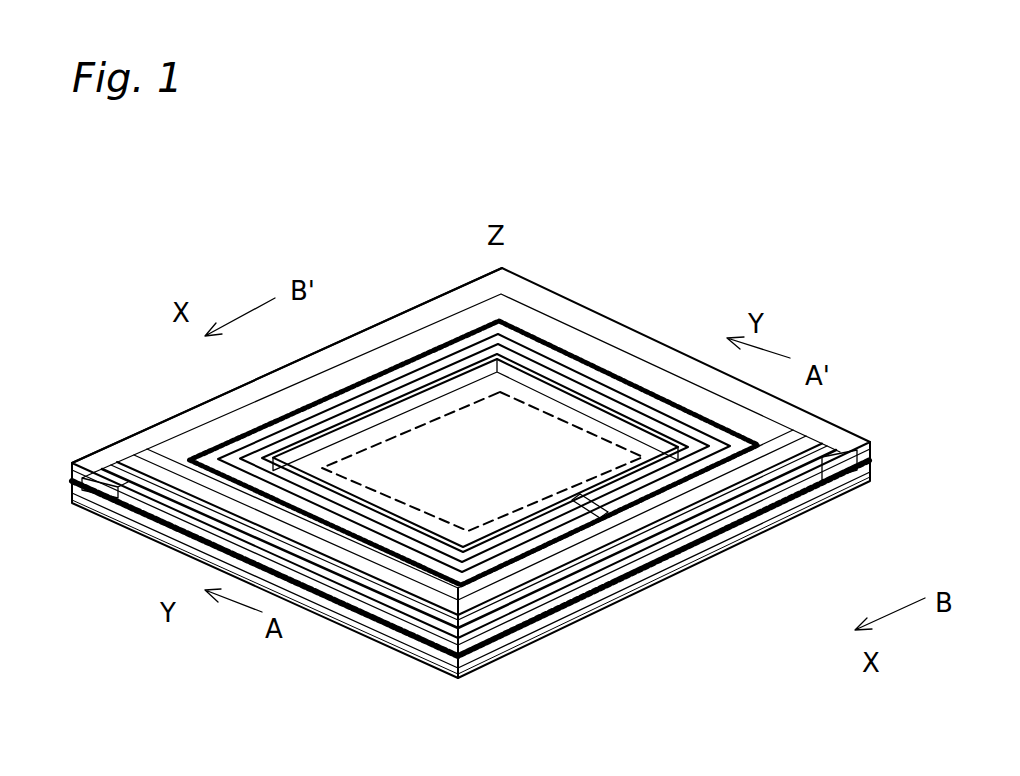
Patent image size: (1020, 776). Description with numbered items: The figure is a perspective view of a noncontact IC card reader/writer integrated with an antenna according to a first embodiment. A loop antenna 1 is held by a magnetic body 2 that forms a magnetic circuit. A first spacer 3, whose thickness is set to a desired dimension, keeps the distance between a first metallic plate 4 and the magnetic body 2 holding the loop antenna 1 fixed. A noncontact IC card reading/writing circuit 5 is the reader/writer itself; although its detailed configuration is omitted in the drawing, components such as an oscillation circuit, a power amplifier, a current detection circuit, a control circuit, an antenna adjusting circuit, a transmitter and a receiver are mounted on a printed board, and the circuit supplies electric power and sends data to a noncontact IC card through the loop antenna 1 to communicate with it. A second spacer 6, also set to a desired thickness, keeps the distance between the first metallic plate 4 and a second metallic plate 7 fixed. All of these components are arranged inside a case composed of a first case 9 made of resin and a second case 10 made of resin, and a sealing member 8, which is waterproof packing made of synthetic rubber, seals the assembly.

The loop antenna 1 is at (566, 352).
The magnetic body 2 is at (590, 362).
The first spacer 3 is at (617, 376).
The first metallic plate 4 is at (590, 560).
The noncontact IC card reading/writing circuit 5 is at (492, 410).
The second spacer 6 is at (540, 583).
The second metallic plate 7 is at (690, 556).
The sealing member 8 is at (800, 505).
The first case 9 is at (148, 432).
The second case 10 is at (375, 338).